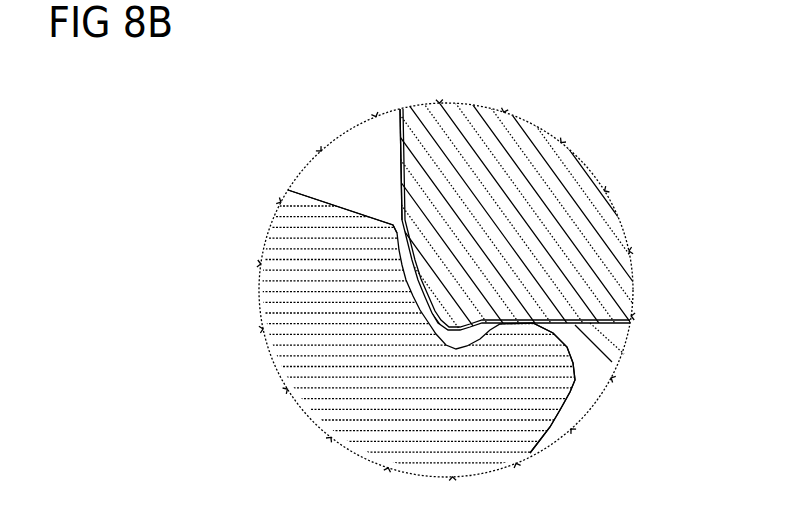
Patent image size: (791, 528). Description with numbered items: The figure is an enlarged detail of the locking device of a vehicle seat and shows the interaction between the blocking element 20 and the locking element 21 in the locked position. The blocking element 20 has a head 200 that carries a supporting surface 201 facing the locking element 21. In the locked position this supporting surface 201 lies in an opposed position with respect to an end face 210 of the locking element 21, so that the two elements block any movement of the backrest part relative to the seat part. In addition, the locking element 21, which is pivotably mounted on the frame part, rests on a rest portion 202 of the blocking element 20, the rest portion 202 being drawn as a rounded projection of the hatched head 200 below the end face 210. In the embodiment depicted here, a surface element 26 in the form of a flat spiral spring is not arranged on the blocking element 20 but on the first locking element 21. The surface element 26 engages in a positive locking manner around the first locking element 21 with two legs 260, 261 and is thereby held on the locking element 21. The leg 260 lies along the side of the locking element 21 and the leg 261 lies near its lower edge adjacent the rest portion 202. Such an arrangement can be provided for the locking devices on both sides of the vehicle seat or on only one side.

The blocking element 20 is at (377, 440).
The locking element 21 is at (537, 162).
The surface element 26 is at (376, 118).
The head 200 is at (305, 325).
The supporting surface 201 is at (393, 225).
The rest portion 202 is at (549, 385).
The end face 210 is at (400, 112).
The leg 260 is at (400, 164).
The leg 261 is at (620, 330).